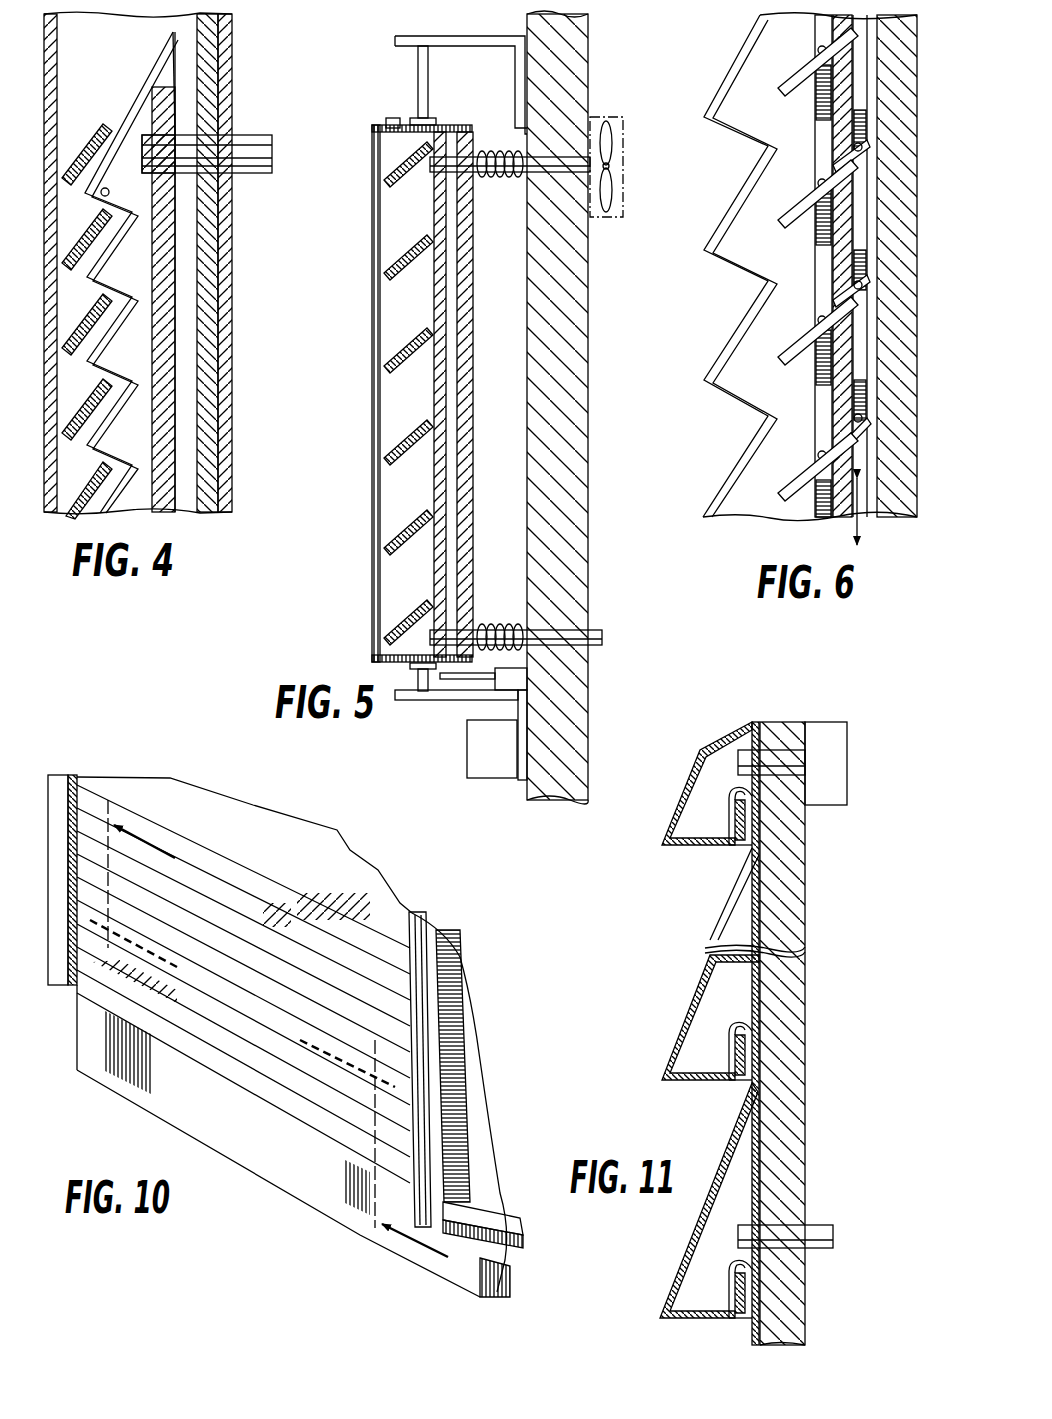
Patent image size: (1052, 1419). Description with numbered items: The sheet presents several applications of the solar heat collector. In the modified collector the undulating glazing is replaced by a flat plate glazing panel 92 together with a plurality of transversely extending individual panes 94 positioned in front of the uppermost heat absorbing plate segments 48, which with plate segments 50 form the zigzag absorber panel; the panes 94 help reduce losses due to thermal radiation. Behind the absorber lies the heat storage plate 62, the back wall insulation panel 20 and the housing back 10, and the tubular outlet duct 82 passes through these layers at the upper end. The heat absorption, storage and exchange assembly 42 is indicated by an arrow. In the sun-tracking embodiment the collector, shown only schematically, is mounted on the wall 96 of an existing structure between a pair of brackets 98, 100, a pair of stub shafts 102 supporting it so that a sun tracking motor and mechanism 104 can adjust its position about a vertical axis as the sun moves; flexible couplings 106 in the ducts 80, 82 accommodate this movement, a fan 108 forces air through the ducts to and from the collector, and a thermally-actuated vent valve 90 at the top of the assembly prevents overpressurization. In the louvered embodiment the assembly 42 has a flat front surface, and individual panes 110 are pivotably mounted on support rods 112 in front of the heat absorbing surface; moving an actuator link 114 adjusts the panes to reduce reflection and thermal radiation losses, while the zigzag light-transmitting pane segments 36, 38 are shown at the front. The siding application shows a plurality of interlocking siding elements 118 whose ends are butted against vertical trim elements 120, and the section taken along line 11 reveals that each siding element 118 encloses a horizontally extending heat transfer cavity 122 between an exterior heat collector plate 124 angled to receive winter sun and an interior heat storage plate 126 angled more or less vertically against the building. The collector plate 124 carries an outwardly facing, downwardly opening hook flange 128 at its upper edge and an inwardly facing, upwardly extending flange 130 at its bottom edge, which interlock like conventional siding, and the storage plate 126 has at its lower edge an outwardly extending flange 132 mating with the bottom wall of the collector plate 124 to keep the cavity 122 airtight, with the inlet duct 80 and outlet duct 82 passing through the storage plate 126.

In FIG. 4, the housing back 10 is at (208, 100).
In FIG. 5, the housing back 10 is at (440, 378).
In FIG. 4, the back wall insulation panel 20 is at (210, 242).
In FIG. 6, the light-transmitting pane segments 36 is at (735, 70).
In FIG. 6, the light-transmitting pane segments 38 is at (712, 140).
In FIG. 4, the heat absorption, storage and exchange assembly 42 is at (136, 345).
In FIG. 6, the heat absorption, storage and exchange assembly 42 is at (896, 485).
In FIG. 4, the heat-absorbing plate segments 48 is at (103, 192).
In FIG. 4, the heat-absorbing plate segments 50 is at (112, 280).
In FIG. 4, the heat storage plate 62 is at (170, 410).
In FIG. 5, the inlet duct 80 is at (465, 632).
In FIG. 11, the inlet duct 80 is at (825, 1232).
In FIG. 4, the outlet duct 82 is at (250, 121).
In FIG. 5, the outlet duct 82 is at (452, 155).
In FIG. 11, the outlet duct 82 is at (795, 760).
In FIG. 5, the thermally-actuated vent valve 90 is at (393, 115).
In FIG. 4, the flat plate glazing panel 92 is at (90, 85).
In FIG. 5, the flat plate glazing panel 92 is at (371, 398).
In FIG. 4, the individual panes 94 is at (85, 162).
In FIG. 5, the individual panes 94 is at (400, 348).
In FIG. 5, the wall 96 is at (563, 382).
In FIG. 5, the bracket 98 is at (428, 40).
In FIG. 5, the bracket 100 is at (407, 702).
In FIG. 5, the stub shafts 102 is at (448, 90).
In FIG. 5, the sun tracking motor and mechanism 104 is at (510, 678).
In FIG. 5, the flexible couplings 106 is at (495, 180).
In FIG. 5, the fan 108 is at (618, 160).
In FIG. 11, the fan 108 is at (825, 740).
In FIG. 6, the individual panes 110 is at (790, 205).
In FIG. 6, the support rods 112 is at (818, 122).
In FIG. 6, the actuator link 114 is at (862, 193).
In FIG. 10, the siding elements 118 is at (300, 1128).
In FIG. 11, the siding elements 118 is at (697, 754).
In FIG. 10, the vertical trim elements 120 is at (62, 790).
In FIG. 11, the heat transfer cavity 122 is at (735, 735).
In FIG. 11, the exterior heat collector plate 124 is at (688, 792).
In FIG. 11, the interior heat storage plate 126 is at (730, 728).
In FIG. 11, the hook flange 128 is at (738, 808).
In FIG. 11, the flange 130 is at (740, 848).
In FIG. 11, the flange 132 is at (700, 832).
In FIG. 10, the section line 11 is at (280, 1040).